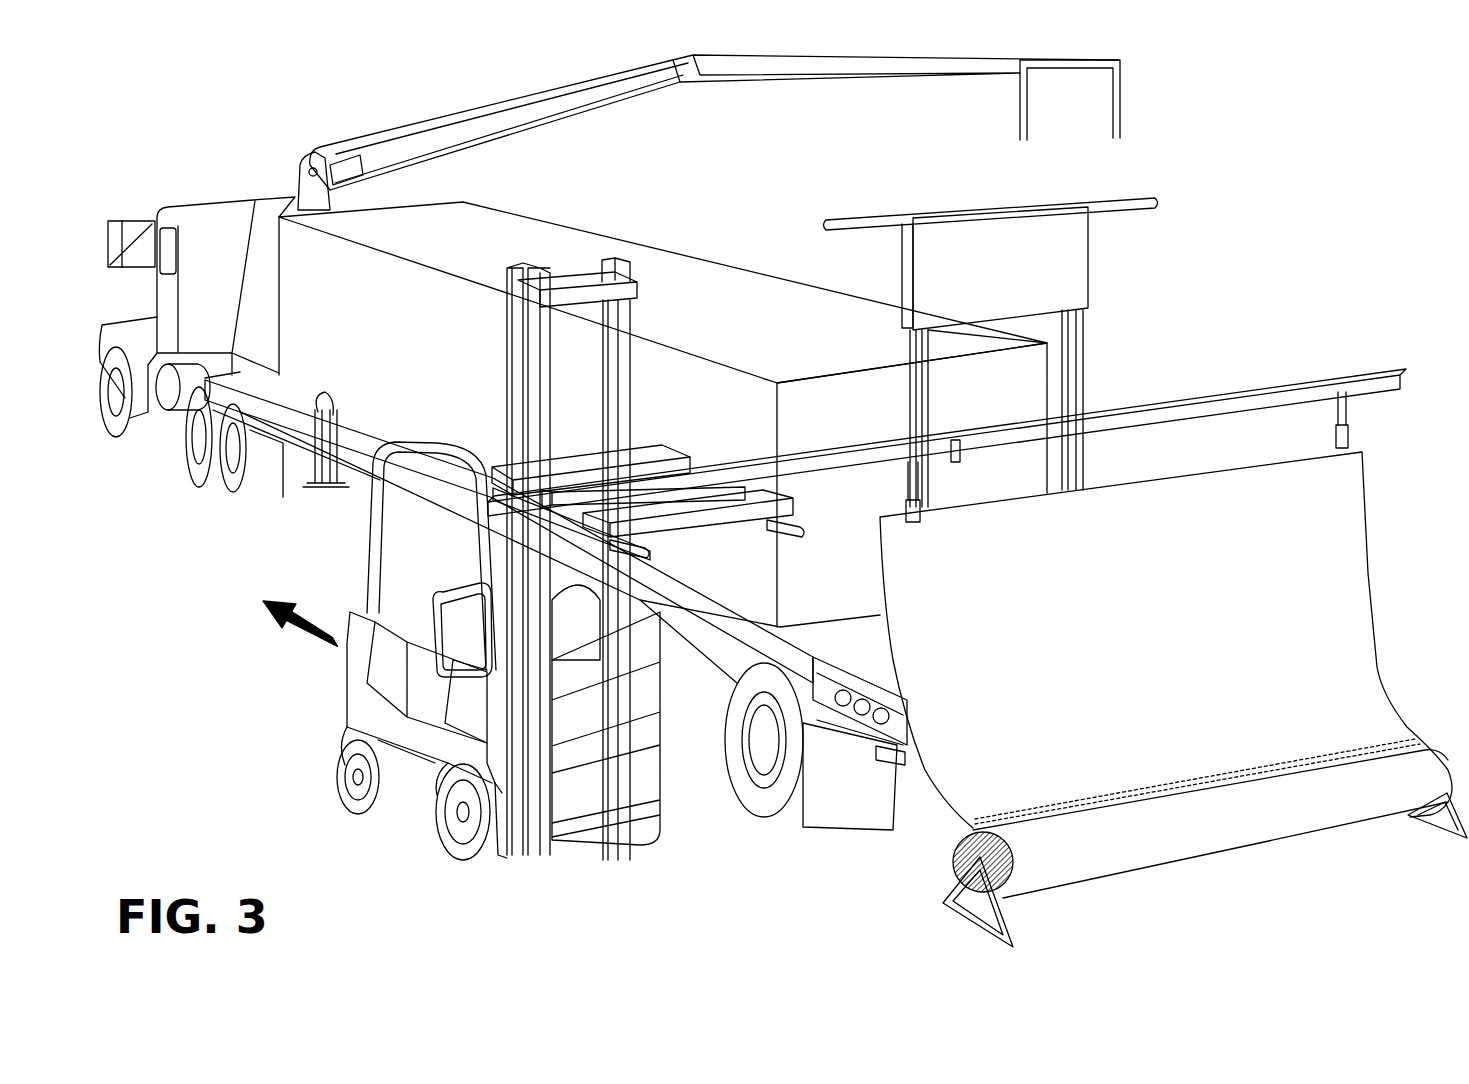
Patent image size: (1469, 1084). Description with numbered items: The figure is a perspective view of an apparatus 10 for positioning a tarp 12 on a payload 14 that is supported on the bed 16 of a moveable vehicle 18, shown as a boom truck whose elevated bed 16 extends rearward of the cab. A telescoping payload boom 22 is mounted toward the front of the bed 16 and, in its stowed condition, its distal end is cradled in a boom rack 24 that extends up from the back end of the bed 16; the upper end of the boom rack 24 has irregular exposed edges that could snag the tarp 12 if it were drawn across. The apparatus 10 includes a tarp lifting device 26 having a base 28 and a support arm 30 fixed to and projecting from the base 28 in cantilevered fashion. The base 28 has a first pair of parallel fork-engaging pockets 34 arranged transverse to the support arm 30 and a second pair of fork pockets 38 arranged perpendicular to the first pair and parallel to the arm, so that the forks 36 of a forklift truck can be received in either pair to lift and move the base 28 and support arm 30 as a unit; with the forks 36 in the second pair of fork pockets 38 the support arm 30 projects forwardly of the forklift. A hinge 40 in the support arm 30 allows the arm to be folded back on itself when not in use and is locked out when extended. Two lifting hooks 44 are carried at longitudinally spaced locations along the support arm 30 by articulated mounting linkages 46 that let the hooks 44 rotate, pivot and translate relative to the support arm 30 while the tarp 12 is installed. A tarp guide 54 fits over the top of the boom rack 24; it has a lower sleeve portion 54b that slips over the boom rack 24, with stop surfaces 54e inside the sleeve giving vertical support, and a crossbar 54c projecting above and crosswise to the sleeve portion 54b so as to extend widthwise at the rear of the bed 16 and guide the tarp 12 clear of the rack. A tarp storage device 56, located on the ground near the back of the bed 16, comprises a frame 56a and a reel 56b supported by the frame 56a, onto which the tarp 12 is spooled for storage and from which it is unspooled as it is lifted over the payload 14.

The apparatus 10 is at (1312, 128).
The tarp 12 is at (1325, 590).
The payload 14 is at (490, 237).
The bed 16 is at (320, 415).
The vehicle 18 is at (190, 200).
The payload boom 22 is at (565, 82).
The boom rack 24 is at (1078, 370).
The tarp lifting device 26 is at (680, 450).
The base 28 is at (690, 470).
The support arm 30 is at (1250, 375).
The fork-engaging pockets 34 is at (775, 545).
The forks 36 is at (645, 553).
The second pair of fork pockets 38 is at (490, 480).
The hinge 40 is at (955, 440).
The lifting hooks 44 is at (922, 500).
The articulated mounting linkages 46 is at (905, 478).
The tarp guide 54 is at (1003, 235).
The lower sleeve portion 54b is at (1068, 262).
The crossbar 54c is at (858, 215).
The stop surfaces 54e is at (900, 264).
The tarp storage device 56 is at (1160, 877).
The frame 56a is at (1012, 915).
The reel 56b is at (957, 853).